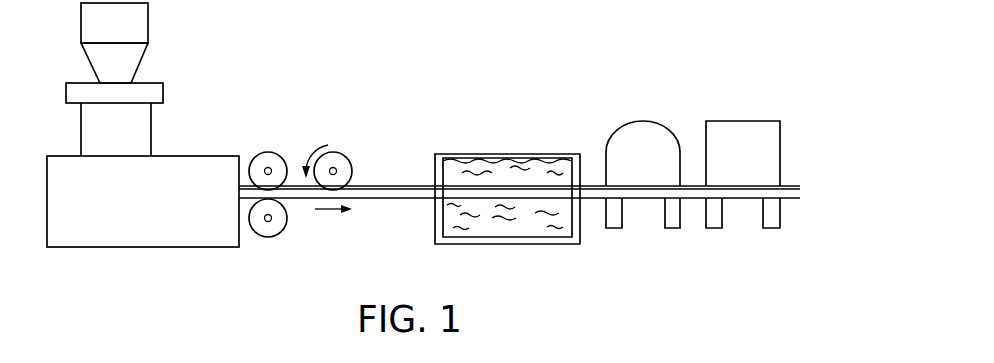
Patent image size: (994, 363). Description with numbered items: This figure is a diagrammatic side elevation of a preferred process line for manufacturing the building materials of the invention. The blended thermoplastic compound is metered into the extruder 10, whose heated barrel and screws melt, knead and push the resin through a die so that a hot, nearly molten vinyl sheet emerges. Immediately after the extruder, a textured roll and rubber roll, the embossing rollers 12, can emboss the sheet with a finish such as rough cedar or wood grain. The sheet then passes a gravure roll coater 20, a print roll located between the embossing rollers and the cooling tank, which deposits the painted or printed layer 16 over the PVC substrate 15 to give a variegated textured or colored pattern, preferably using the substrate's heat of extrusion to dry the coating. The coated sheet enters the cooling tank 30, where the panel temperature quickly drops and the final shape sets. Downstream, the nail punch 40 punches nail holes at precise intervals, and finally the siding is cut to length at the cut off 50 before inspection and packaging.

The extruder 10 is at (133, 215).
The embossing rollers 12 is at (272, 230).
The gravure roll coater 20 is at (337, 162).
The PVC substrate 15 is at (400, 198).
The painted or printed layer 16 is at (378, 186).
The cooling tank 30 is at (497, 167).
The nail punch 40 is at (642, 148).
The cut off 50 is at (742, 147).